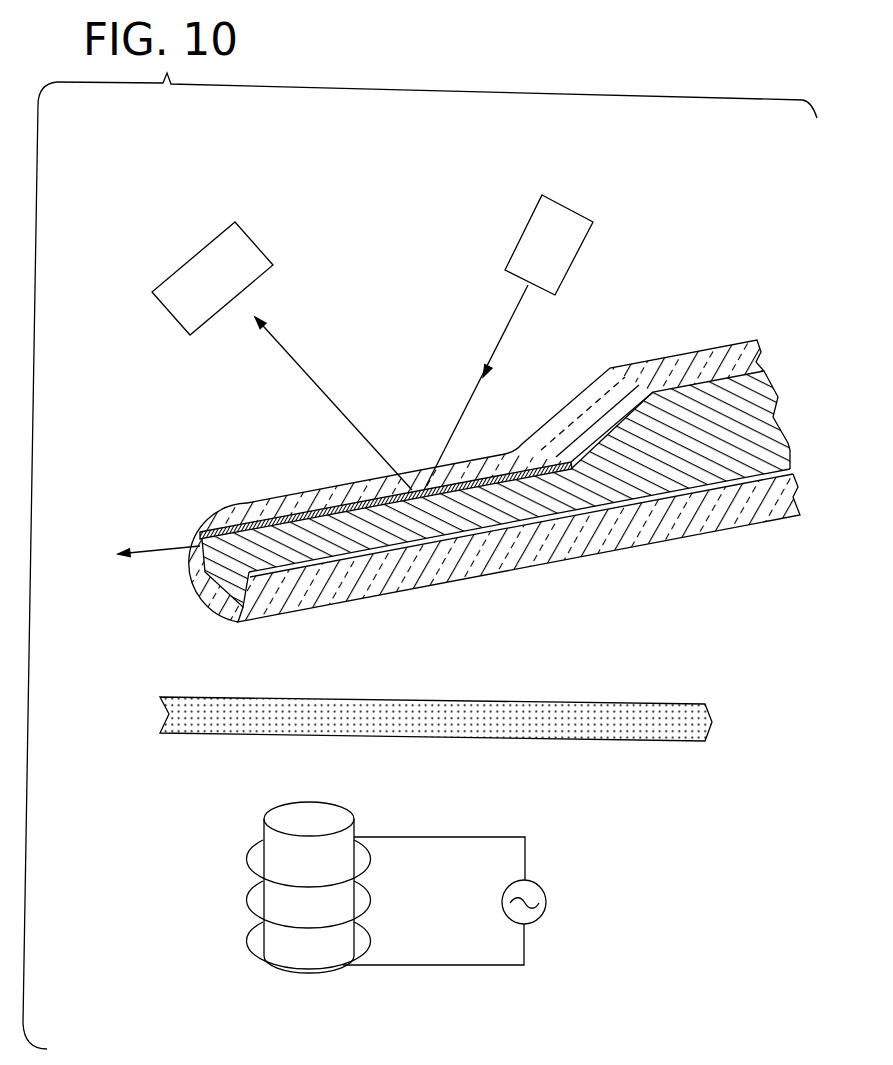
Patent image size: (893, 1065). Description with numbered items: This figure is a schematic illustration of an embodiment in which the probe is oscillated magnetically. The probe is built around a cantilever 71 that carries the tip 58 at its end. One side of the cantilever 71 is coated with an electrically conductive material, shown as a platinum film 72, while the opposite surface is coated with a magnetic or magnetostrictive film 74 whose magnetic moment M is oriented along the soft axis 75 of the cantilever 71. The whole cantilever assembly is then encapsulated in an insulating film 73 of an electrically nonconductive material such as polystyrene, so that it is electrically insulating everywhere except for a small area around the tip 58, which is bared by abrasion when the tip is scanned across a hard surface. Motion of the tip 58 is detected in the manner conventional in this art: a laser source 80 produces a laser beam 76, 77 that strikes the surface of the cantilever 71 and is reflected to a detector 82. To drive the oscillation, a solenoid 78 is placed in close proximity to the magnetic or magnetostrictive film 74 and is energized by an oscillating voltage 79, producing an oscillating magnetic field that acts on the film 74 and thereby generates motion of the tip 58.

The tip 58 is at (247, 626).
The cantilever 71 is at (400, 530).
The platinum film 72 is at (503, 533).
The insulating film 73 is at (615, 537).
The magnetic or magnetostrictive film 74 is at (251, 525).
The soft axis 75 is at (143, 553).
The laser beam 76 is at (500, 335).
The laser beam 77 is at (320, 385).
The solenoid 78 is at (322, 812).
The oscillating voltage 79 is at (546, 900).
The laser source 80 is at (580, 248).
The detector 82 is at (256, 245).